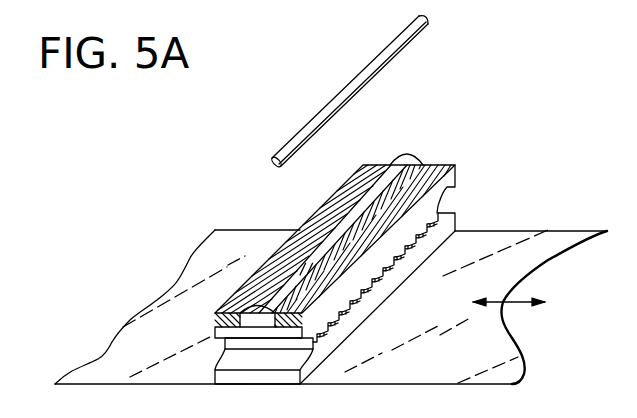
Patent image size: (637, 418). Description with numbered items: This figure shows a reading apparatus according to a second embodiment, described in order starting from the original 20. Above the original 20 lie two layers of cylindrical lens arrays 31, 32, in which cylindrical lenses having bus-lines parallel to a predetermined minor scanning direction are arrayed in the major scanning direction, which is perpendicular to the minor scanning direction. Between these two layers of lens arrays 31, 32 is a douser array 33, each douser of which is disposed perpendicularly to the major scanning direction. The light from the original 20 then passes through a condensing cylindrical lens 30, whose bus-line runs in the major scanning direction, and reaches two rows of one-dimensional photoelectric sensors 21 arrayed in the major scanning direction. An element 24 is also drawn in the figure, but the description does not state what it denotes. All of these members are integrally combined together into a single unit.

The original 20 is at (564, 233).
The one-dimensional photoelectric sensors 21 is at (375, 164).
The rod 24 is at (373, 67).
The condensing cylindrical lens 30 is at (337, 218).
The cylindrical lens array 31 is at (457, 222).
The cylindrical lens array 32 is at (450, 196).
The douser array 33 is at (214, 334).